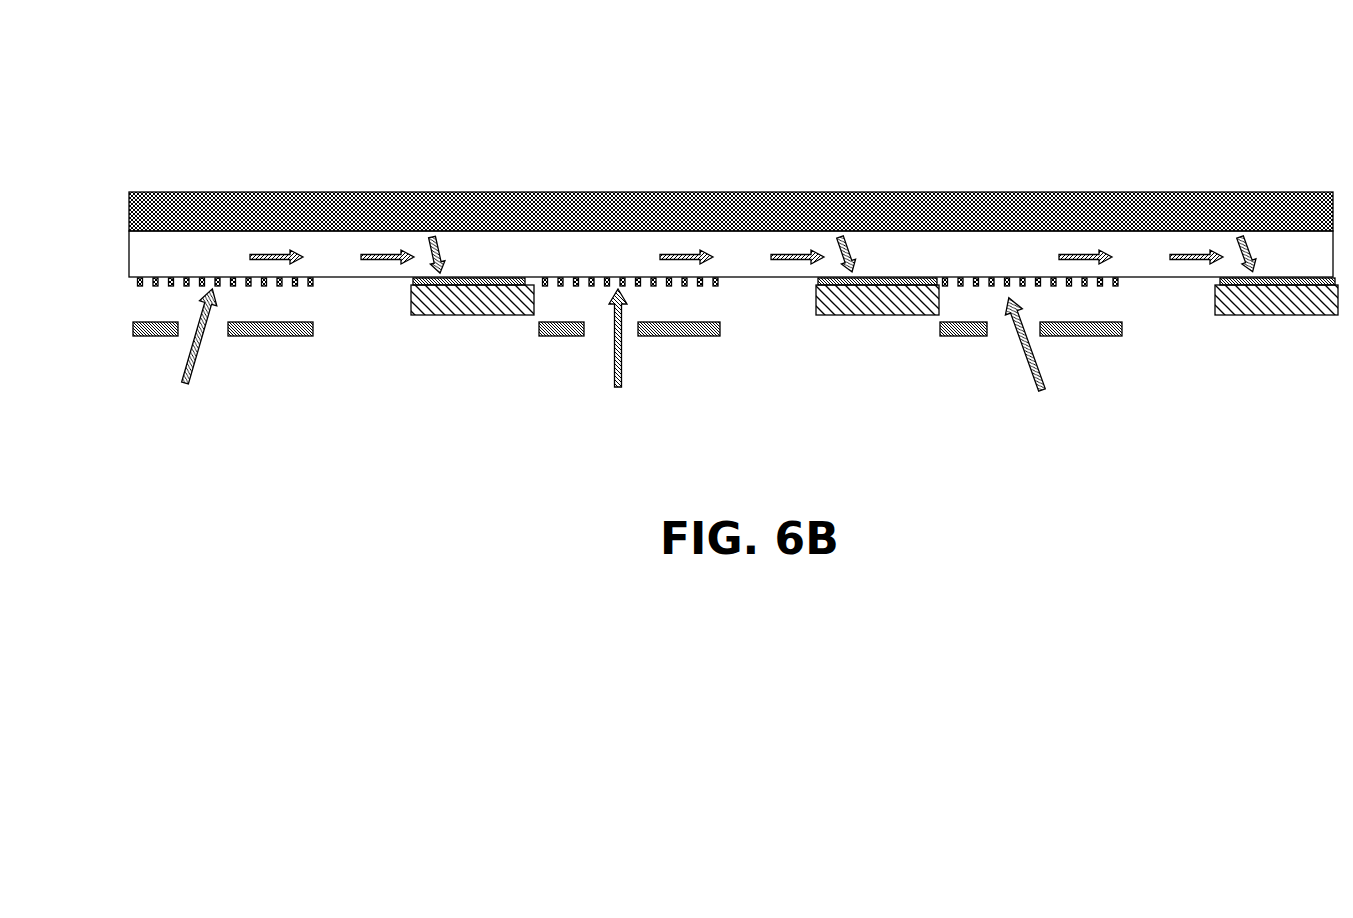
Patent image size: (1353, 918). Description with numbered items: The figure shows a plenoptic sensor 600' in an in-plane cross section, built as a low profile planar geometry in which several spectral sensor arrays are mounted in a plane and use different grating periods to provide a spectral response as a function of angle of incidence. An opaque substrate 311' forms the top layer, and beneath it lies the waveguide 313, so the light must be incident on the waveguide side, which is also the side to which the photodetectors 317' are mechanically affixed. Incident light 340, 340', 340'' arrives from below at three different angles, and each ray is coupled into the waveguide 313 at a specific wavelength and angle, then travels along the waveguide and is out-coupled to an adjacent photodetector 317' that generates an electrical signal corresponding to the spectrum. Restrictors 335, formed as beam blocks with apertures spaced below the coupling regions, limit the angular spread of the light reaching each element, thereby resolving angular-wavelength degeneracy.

The plenoptic sensor 600' is at (700, 219).
The opaque substrate 311' is at (704, 190).
The waveguide 313 is at (116, 248).
The photodetector 317' is at (874, 320).
The restrictor 335 is at (133, 331).
The incident light 340 is at (617, 359).
The incident light 340' is at (187, 356).
The incident light 340'' is at (1046, 360).